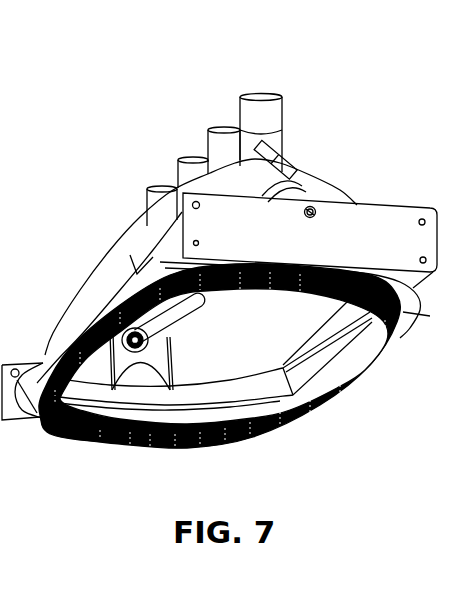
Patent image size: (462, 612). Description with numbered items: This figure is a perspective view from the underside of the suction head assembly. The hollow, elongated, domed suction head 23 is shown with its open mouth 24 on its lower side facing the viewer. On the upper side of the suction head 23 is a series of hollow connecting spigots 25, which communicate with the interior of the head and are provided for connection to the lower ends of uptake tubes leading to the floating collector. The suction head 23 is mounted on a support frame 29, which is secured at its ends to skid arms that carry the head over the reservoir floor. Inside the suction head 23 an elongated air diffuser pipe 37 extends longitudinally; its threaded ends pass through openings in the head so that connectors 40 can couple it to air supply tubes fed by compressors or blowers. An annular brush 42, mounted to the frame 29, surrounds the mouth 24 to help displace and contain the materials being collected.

The suction head 23 is at (103, 271).
The open mouth 24 is at (168, 450).
The hollow connecting spigots 25 is at (227, 127).
The support frame 29 is at (372, 202).
The air diffuser pipe 37 is at (177, 318).
The connectors 40 is at (268, 148).
The annular brush 42 is at (90, 447).